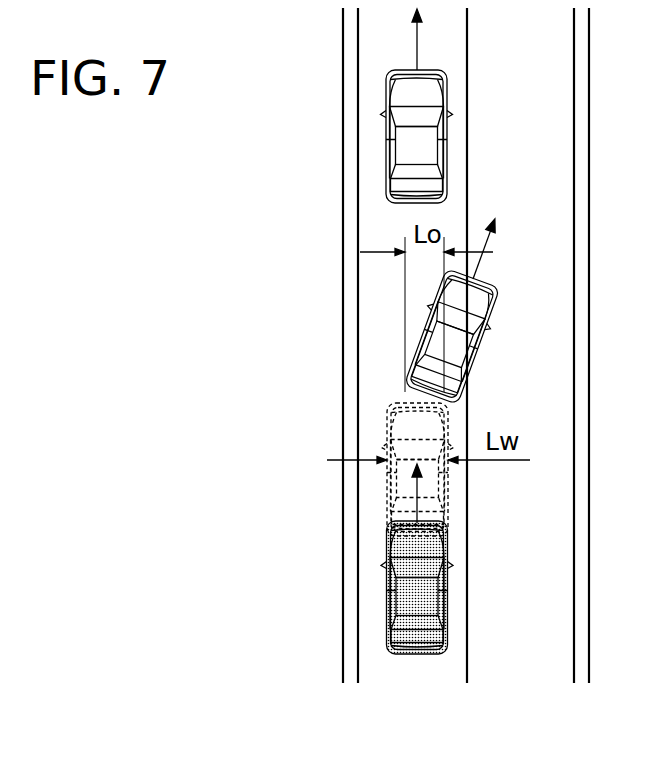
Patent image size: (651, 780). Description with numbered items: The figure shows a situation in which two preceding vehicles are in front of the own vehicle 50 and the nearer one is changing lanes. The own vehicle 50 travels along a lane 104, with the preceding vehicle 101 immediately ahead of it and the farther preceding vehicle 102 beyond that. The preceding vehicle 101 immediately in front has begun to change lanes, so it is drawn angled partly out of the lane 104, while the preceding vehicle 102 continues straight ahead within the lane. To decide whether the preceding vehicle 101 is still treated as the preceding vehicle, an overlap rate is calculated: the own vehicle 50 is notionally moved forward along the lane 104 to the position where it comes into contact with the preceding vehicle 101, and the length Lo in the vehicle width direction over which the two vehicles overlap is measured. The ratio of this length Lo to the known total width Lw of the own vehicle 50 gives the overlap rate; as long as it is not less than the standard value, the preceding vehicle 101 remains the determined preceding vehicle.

The own vehicle 50 is at (447, 607).
The preceding vehicle immediately in front 101 is at (493, 313).
The preceding vehicle 102 is at (386, 134).
The lane 104 is at (383, 326).